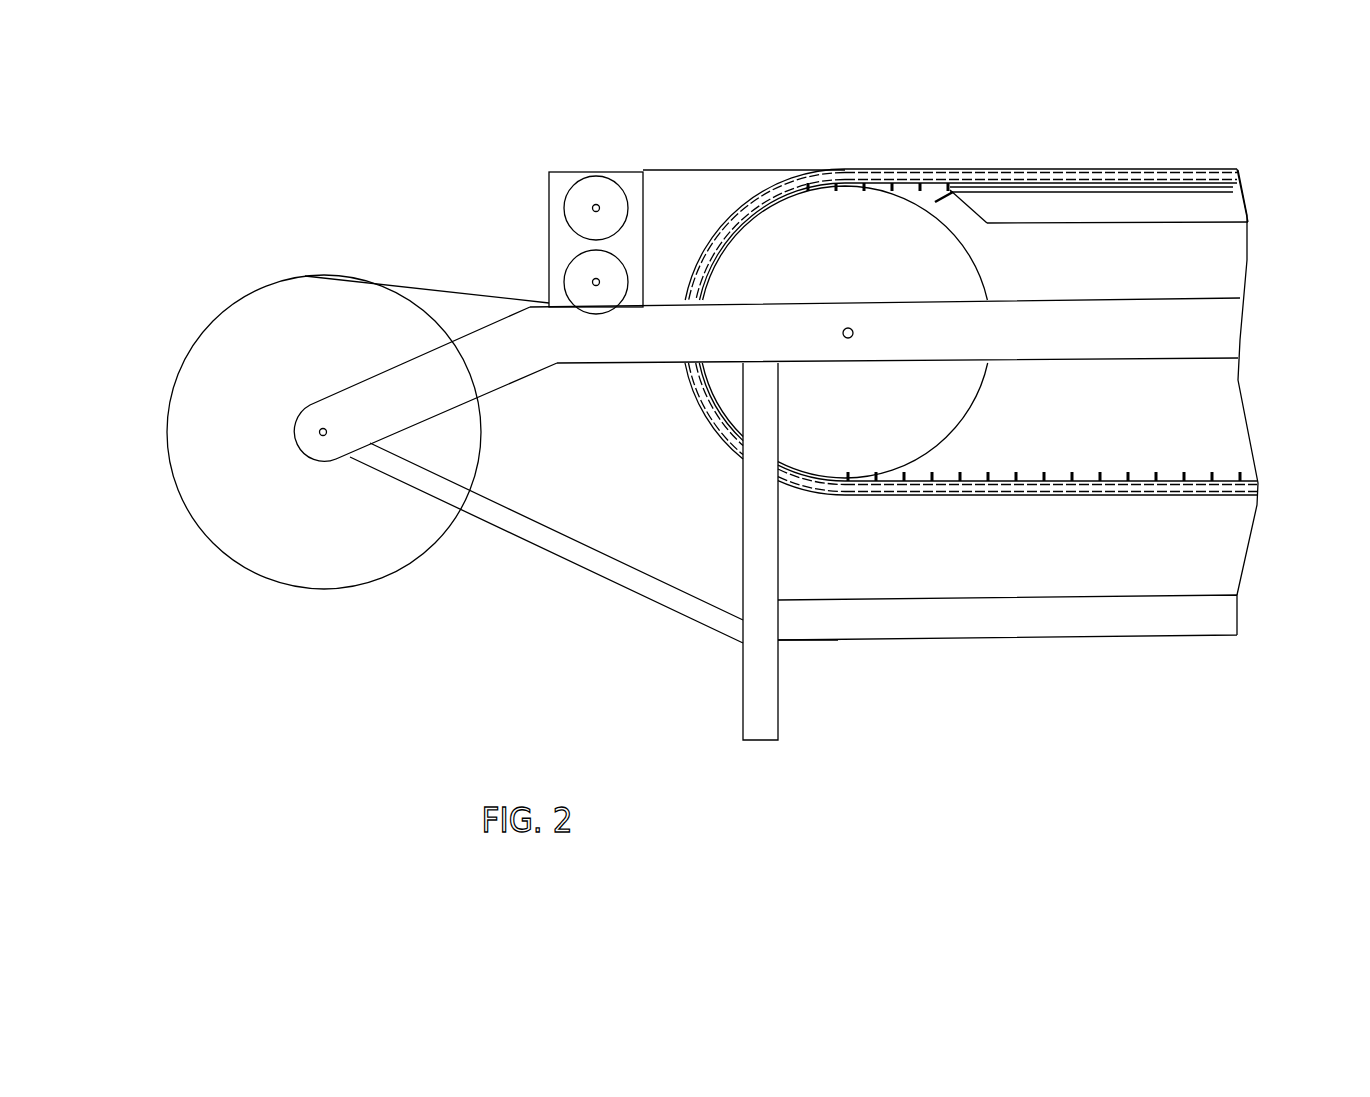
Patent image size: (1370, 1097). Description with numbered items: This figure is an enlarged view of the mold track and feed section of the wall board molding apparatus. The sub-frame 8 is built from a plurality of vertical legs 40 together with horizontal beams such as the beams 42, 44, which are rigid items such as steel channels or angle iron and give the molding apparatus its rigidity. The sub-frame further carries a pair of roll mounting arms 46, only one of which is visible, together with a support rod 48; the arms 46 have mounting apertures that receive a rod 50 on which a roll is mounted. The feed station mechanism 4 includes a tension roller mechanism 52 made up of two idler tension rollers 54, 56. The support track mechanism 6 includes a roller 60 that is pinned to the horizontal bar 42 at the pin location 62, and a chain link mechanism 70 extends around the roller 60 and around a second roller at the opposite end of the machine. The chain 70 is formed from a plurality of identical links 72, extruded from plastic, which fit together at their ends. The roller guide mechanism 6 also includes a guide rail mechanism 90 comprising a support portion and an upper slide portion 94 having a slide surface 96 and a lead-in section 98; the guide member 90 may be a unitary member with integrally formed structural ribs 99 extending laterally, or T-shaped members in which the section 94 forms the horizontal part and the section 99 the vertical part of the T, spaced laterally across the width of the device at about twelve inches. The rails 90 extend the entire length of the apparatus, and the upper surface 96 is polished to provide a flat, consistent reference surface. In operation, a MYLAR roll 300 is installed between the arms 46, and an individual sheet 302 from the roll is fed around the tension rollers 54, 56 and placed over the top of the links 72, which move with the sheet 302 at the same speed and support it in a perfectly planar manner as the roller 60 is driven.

The feed station mechanism 4 is at (280, 243).
The support track mechanism 6 is at (697, 193).
The sub-frame 8 is at (838, 642).
The vertical legs 40 is at (760, 535).
The horizontal beam 42 is at (1215, 325).
The horizontal beam 44 is at (1110, 628).
The roll mounting arms 46 is at (440, 392).
The support rod 48 is at (597, 556).
The rod 50 is at (320, 434).
The tension roller mechanism 52 is at (602, 170).
The idler tension roller 54 is at (578, 287).
The idler tension roller 56 is at (576, 207).
The roller 60 is at (903, 240).
The pin location 62 is at (854, 332).
The chain link mechanism 70 is at (836, 500).
The links 72 is at (787, 172).
The guide rail mechanism 90 is at (1208, 212).
The upper slide portion 94 is at (1030, 188).
The slide surface 96 is at (1102, 177).
The lead-in section 98 is at (942, 182).
The structural ribs 99 is at (1120, 208).
The MYLAR roll 300 is at (237, 343).
The MYLAR sheet 302 is at (440, 290).